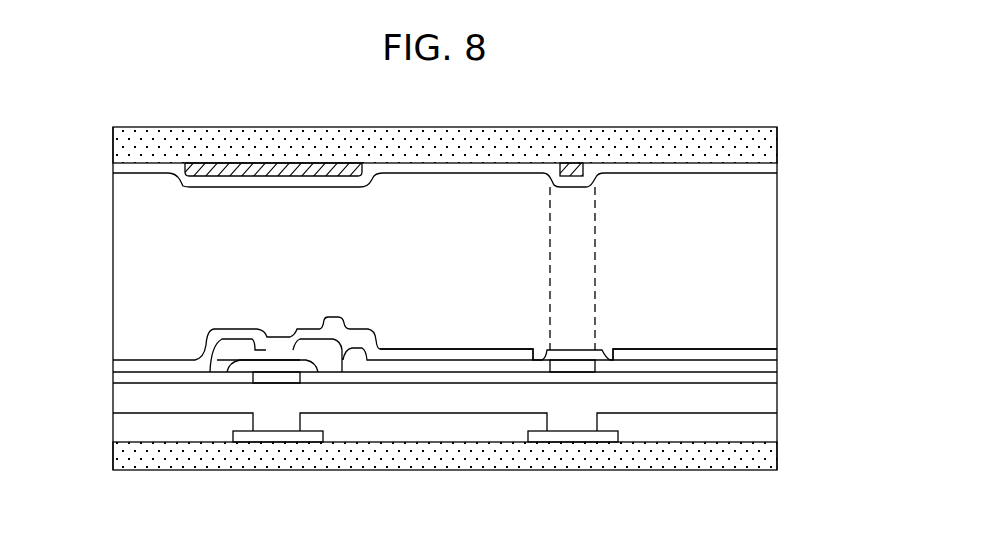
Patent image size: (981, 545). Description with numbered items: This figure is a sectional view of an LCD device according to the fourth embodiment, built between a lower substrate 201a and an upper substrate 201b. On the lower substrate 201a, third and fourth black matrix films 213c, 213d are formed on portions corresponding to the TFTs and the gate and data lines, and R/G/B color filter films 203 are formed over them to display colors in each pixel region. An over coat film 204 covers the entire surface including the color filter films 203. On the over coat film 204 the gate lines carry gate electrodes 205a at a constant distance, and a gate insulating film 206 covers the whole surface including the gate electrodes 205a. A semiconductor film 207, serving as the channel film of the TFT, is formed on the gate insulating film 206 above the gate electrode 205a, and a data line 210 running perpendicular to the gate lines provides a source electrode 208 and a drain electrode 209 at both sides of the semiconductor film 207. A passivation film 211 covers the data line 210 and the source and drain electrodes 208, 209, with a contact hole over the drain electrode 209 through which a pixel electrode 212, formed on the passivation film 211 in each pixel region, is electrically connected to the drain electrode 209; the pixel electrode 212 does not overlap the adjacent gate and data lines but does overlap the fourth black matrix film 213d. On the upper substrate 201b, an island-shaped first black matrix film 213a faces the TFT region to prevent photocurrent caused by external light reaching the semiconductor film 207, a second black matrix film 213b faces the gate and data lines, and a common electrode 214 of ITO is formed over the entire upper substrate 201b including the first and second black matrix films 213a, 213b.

The lower substrate 201a is at (723, 453).
The upper substrate 201b is at (770, 133).
The R/G/B color filter film 203 is at (768, 429).
The over coat film 204 is at (120, 398).
The gate electrode 205a is at (277, 378).
The gate insulating film 206 is at (120, 372).
The semiconductor film 207 is at (238, 365).
The source electrode 208 is at (225, 348).
The drain electrode 209 is at (335, 355).
The data line 210 is at (570, 363).
The passivation film 211 is at (765, 368).
The pixel electrode 212 is at (495, 355).
The first black matrix film 213a is at (253, 165).
The second black matrix film 213b is at (571, 165).
The third black matrix film 213c is at (298, 434).
The fourth black matrix film 213d is at (593, 435).
The common electrode 214 is at (768, 170).